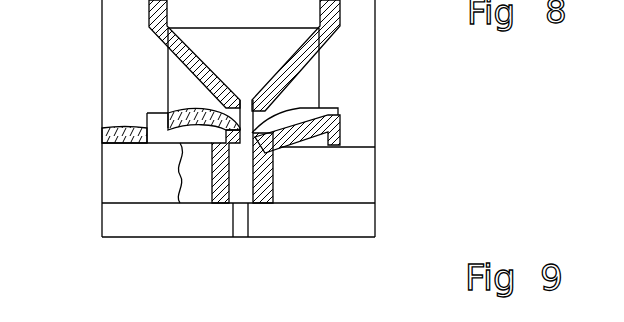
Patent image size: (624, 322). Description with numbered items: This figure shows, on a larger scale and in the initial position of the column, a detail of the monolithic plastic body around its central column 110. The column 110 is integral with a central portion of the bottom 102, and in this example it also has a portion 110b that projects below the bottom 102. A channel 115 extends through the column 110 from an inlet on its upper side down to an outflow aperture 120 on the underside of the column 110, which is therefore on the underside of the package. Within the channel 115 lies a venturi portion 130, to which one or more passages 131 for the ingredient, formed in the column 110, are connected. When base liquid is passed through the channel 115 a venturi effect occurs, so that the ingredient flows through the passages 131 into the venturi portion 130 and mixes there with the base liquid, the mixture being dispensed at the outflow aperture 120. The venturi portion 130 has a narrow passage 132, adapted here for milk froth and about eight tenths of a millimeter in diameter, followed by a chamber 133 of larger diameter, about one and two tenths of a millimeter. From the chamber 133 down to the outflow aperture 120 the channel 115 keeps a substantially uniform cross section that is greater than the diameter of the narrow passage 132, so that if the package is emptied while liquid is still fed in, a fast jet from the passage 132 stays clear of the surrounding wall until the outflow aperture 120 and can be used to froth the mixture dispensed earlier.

The bottom 102 is at (345, 131).
The central column 110 is at (341, 30).
The portion projecting below the bottom 110b is at (178, 170).
The channel 115 is at (263, 62).
The outflow aperture 120 is at (223, 217).
The venturi portion 130 is at (424, 113).
The passages for the ingredient 131 is at (183, 89).
The narrow passage 132 is at (198, 110).
The chamber 133 is at (250, 205).